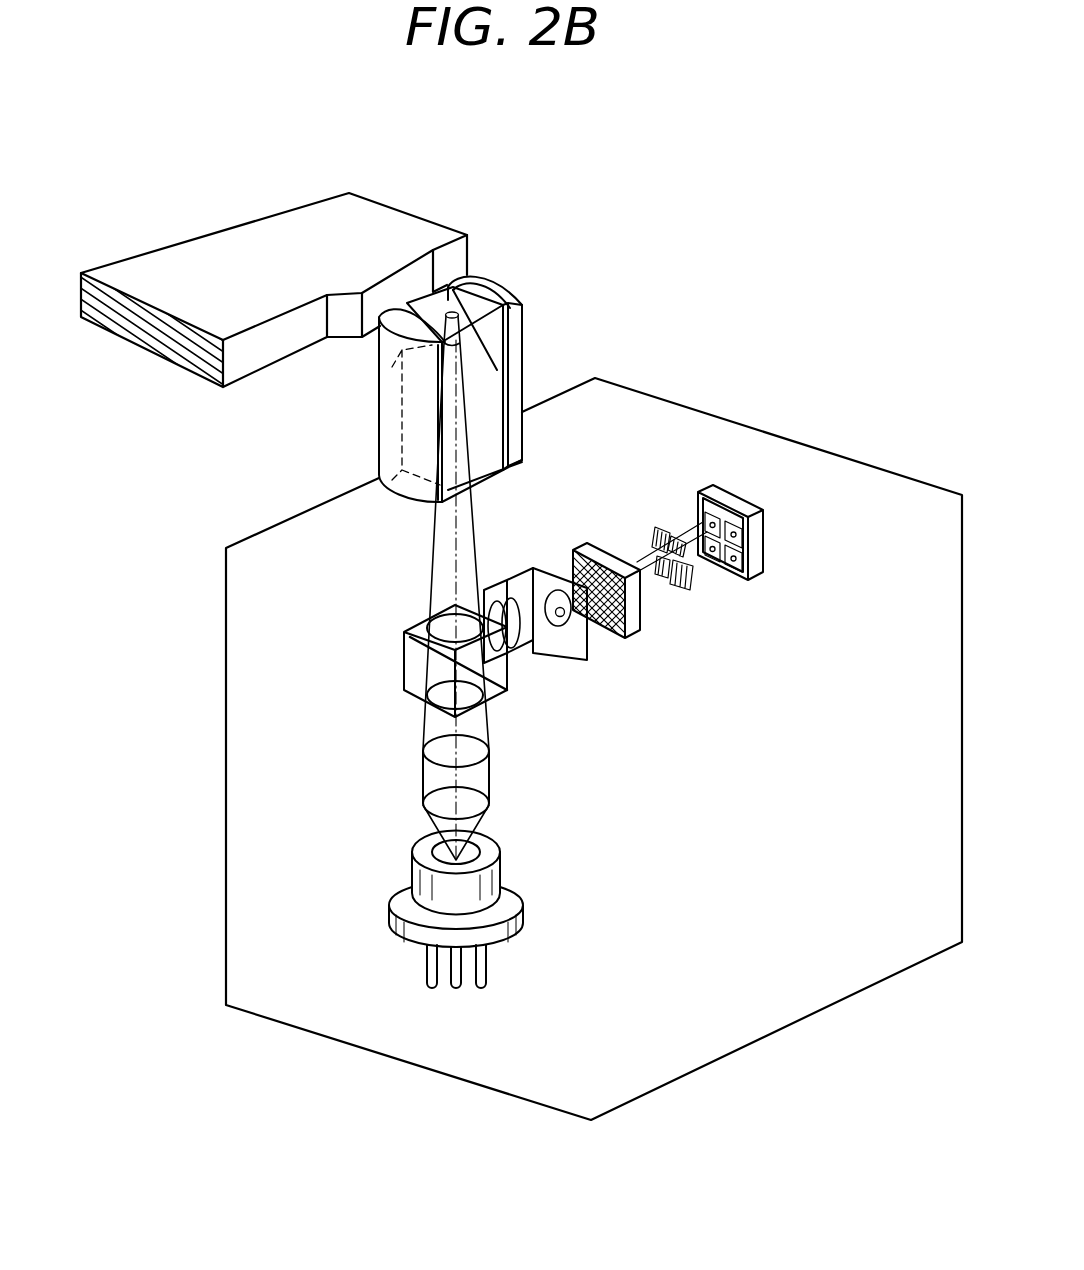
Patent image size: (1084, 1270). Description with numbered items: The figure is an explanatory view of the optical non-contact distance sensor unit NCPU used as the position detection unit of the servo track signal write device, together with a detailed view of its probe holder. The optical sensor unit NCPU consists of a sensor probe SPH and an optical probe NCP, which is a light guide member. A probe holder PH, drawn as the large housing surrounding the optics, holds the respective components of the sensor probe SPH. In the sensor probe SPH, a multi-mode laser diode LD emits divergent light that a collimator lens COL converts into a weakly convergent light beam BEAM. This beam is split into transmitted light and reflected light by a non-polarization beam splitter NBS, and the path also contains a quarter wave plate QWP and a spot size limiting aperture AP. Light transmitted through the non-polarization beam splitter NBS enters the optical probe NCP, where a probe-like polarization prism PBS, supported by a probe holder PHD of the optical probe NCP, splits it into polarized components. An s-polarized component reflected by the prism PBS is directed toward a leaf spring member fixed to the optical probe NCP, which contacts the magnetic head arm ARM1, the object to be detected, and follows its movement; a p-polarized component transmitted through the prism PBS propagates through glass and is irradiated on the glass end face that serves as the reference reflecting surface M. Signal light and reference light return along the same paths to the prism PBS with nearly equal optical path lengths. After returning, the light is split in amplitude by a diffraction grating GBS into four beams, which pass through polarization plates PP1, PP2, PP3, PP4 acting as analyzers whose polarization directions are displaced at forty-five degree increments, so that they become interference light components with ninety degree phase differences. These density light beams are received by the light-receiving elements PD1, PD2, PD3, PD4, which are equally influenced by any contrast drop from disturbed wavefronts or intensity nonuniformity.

The magnetic head arm ARM1 is at (400, 228).
The reference reflecting surface M is at (490, 307).
The optical probe NCP is at (490, 393).
The probe-like polarization prism PBS is at (397, 363).
The probe holder PHD is at (515, 445).
The optical sensor unit NCPU is at (886, 367).
The non-polarization beam splitter NBS is at (403, 662).
The quarter wave plate QWP is at (522, 668).
The spot size limiting aperture AP is at (560, 652).
The diffraction grating GBS is at (613, 650).
The polarization plate PP1 is at (684, 584).
The polarization plate PP2 is at (680, 537).
The polarization plate PP3 is at (657, 537).
The polarization plate PP4 is at (665, 560).
The light-receiving element PD1 is at (745, 552).
The light-receiving element PD2 is at (742, 522).
The light-receiving element PD3 is at (703, 514).
The light-receiving element PD4 is at (720, 562).
The sensor probe SPH is at (755, 705).
The light beam BEAM is at (420, 722).
The collimator lens COL is at (415, 778).
The multi-mode laser diode LD is at (395, 867).
The probe holder PH is at (668, 1060).